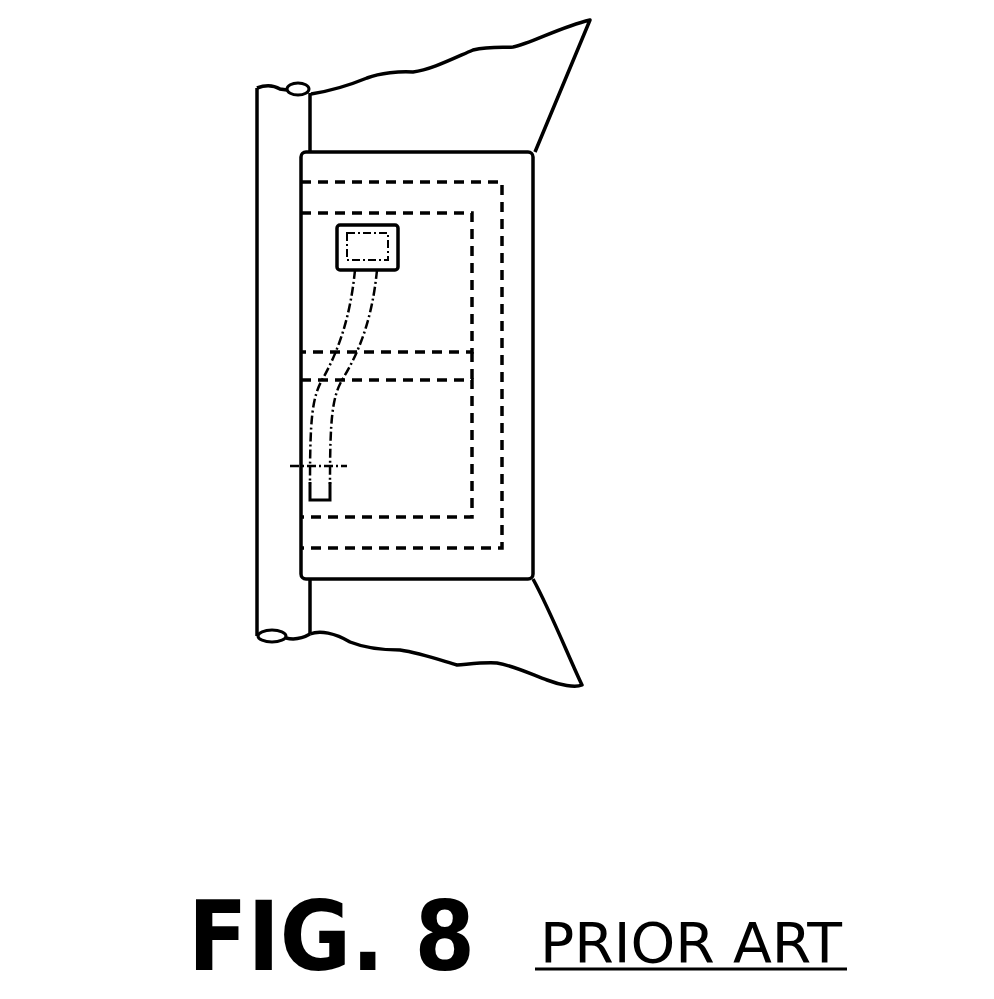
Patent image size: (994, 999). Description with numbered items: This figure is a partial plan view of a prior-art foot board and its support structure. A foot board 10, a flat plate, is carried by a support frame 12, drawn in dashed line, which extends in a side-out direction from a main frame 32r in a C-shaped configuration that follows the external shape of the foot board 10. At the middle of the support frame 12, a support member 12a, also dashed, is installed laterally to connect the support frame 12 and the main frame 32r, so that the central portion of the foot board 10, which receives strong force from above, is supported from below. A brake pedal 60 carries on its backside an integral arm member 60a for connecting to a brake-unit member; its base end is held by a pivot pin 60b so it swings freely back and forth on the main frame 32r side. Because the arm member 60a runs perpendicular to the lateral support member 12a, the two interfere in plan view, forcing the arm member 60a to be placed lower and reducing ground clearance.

The foot board 10 is at (535, 238).
The support frame 12 is at (487, 457).
The support member 12a is at (411, 350).
The main frame 32r is at (277, 311).
The brake pedal 60 is at (335, 238).
The arm member 60a is at (305, 343).
The pivot pin 60b is at (307, 473).